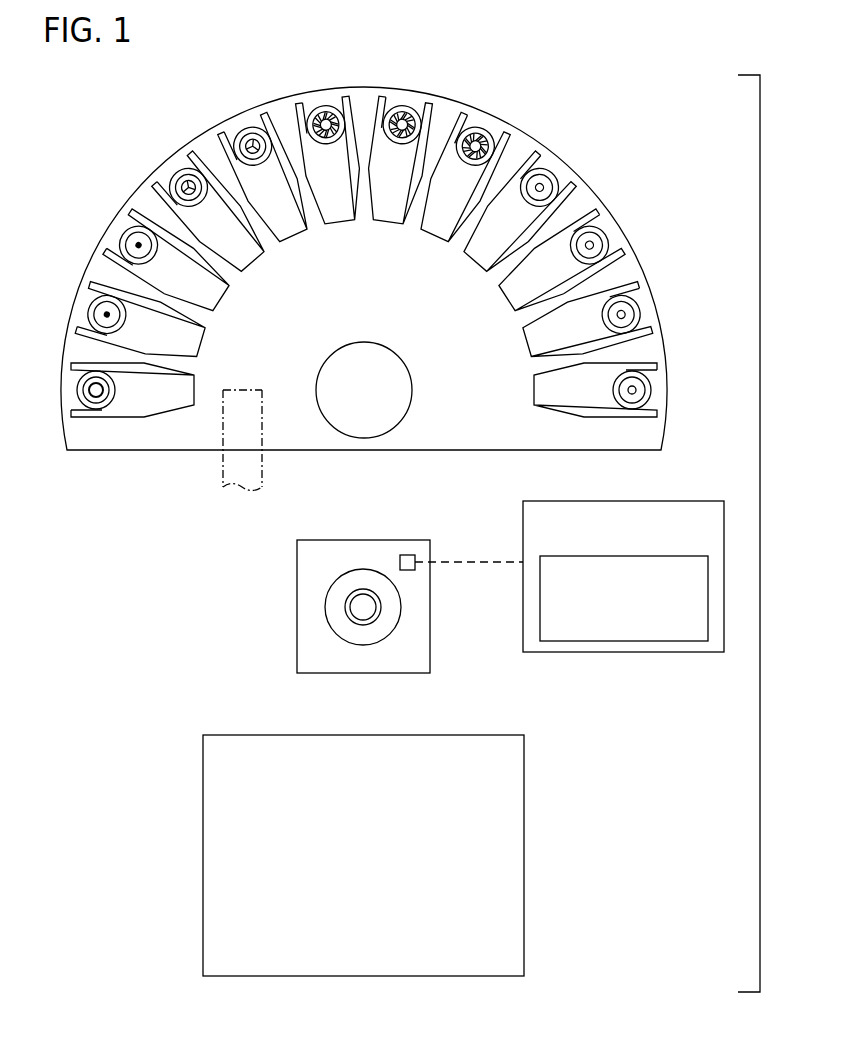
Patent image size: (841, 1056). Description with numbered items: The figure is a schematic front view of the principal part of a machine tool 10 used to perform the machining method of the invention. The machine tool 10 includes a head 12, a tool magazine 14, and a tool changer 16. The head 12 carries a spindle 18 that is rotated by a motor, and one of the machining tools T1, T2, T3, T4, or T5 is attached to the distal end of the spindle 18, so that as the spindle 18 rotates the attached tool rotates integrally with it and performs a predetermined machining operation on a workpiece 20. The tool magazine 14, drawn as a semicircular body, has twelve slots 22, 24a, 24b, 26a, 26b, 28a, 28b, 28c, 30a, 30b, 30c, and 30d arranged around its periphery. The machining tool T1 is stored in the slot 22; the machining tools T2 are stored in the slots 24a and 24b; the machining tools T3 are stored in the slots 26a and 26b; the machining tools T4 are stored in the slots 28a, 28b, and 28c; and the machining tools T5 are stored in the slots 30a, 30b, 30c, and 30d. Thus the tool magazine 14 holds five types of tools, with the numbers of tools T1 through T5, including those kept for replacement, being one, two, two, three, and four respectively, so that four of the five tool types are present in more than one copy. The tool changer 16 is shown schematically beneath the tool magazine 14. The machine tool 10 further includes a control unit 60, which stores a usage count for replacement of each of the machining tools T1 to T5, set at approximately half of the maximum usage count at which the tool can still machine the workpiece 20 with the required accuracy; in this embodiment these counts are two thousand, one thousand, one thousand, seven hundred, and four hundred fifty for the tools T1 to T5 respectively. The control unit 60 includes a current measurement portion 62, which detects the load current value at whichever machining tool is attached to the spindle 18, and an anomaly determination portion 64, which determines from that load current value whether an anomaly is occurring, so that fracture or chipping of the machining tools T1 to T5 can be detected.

The machine tool 10 is at (683, 43).
The head 12 is at (332, 540).
The tool magazine 14 is at (92, 451).
The tool changer 16 is at (240, 388).
The spindle 18 is at (349, 596).
The workpiece 20 is at (482, 735).
The slot 22 is at (72, 408).
The slot 24a is at (76, 333).
The slot 24b is at (101, 254).
The slot 26a is at (151, 185).
The slot 26b is at (217, 133).
The slot 28a is at (296, 103).
The slot 28b is at (381, 95).
The slot 28c is at (463, 111).
The slot 30a is at (538, 150).
The slot 30b is at (598, 208).
The slot 30c is at (640, 283).
The slot 30d is at (658, 366).
The control unit 60 is at (665, 500).
The current measurement portion 62 is at (407, 555).
The anomaly determination portion 64 is at (645, 641).
The machining tool T1 is at (77, 388).
The machining tool T2 is at (90, 310).
The machining tool T3 is at (175, 176).
The machining tool T4 is at (324, 106).
The machining tool T5 is at (553, 178).